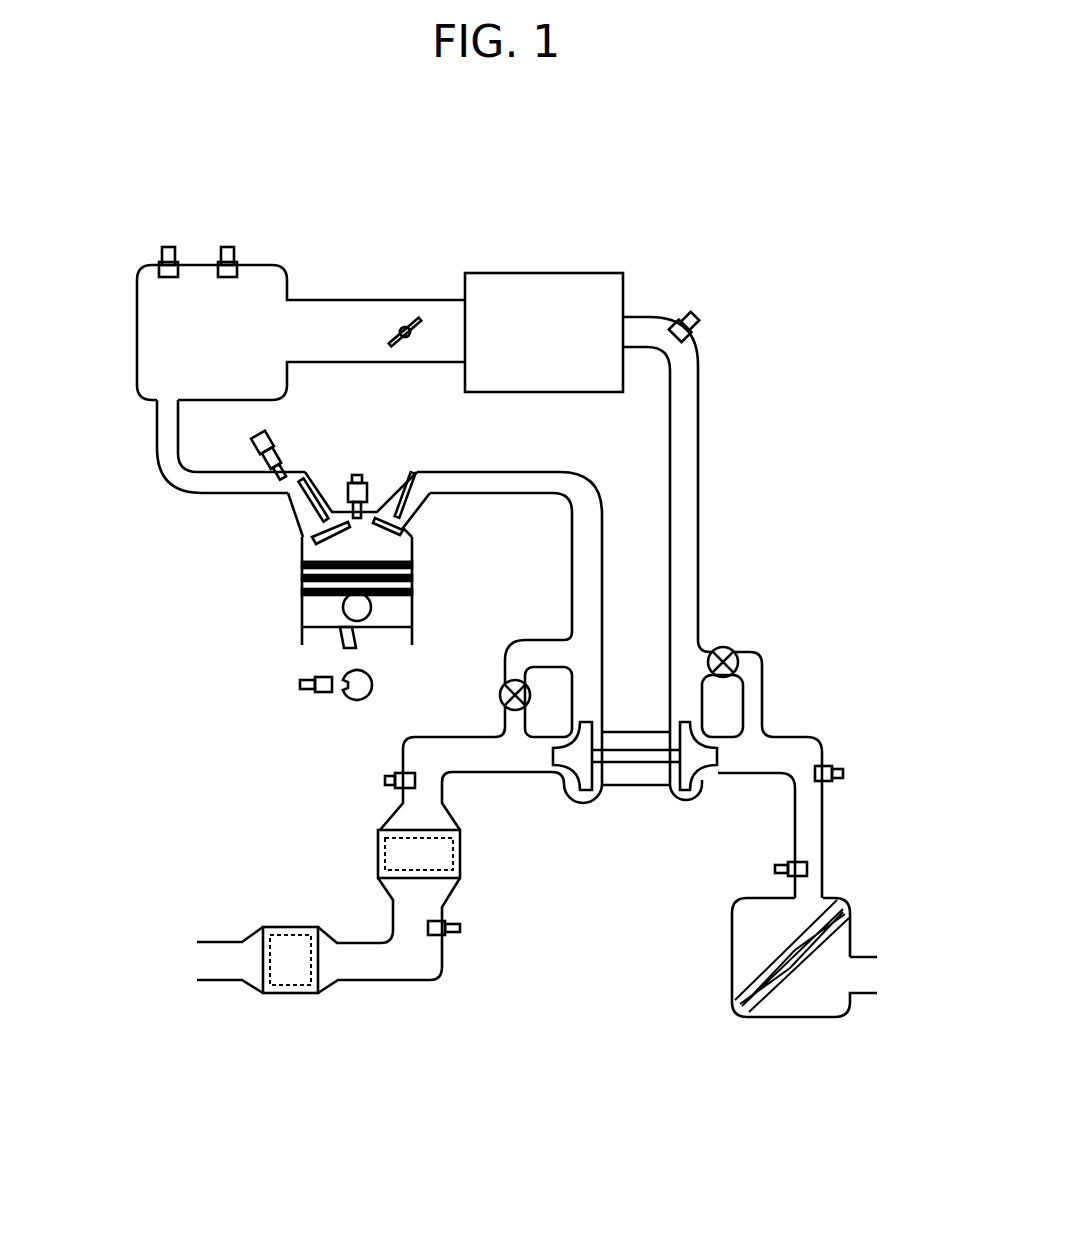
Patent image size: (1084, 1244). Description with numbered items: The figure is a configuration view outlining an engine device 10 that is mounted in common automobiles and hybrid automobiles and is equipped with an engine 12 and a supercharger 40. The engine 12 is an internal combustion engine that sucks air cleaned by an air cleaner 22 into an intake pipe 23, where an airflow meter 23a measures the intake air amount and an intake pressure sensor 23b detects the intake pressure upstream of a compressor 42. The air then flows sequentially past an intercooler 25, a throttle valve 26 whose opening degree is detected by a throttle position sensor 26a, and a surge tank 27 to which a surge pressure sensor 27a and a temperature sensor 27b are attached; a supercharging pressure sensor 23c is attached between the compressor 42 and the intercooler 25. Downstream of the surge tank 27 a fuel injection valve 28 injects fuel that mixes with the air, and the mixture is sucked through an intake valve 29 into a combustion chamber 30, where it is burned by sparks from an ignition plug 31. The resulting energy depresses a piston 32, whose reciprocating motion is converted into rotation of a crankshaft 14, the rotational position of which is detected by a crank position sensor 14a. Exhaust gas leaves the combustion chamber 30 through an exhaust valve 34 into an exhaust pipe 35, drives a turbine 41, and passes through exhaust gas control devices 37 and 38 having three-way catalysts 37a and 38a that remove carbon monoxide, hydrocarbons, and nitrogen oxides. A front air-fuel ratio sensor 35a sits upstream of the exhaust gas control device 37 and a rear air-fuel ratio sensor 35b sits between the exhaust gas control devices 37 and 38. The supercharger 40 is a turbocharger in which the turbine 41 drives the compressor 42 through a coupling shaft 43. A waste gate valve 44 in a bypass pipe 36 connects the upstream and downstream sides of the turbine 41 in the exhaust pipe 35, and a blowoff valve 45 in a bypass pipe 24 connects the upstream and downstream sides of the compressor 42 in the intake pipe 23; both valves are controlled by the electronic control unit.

The engine device 10 is at (734, 150).
The engine 12 is at (653, 221).
The crankshaft 14 is at (350, 697).
The crank position sensor 14a is at (300, 685).
The air cleaner 22 is at (732, 967).
The intake pipe 23 is at (700, 463).
The airflow meter 23a is at (775, 867).
The intake pressure sensor 23b is at (843, 773).
The supercharging pressure sensor 23c is at (696, 319).
The bypass pipe 24 is at (762, 684).
The intercooler 25 is at (542, 273).
The throttle valve 26 is at (412, 320).
The throttle position sensor 26a is at (404, 340).
The surge tank 27 is at (137, 331).
The surge pressure sensor 27a is at (226, 247).
The temperature sensor 27b is at (167, 247).
The fuel injection valve 28 is at (288, 452).
The intake valve 29 is at (318, 533).
The combustion chamber 30 is at (321, 557).
The ignition plug 31 is at (357, 474).
The piston 32 is at (317, 617).
The exhaust valve 34 is at (403, 526).
The exhaust pipe 35 is at (487, 471).
The front air-fuel ratio sensor 35a is at (385, 780).
The rear air-fuel ratio sensor 35b is at (455, 935).
The bypass pipe 36 is at (535, 638).
The exhaust gas control device 37 is at (377, 835).
The catalyst 37a is at (377, 862).
The exhaust gas control device 38 is at (275, 995).
The catalyst 38a is at (290, 995).
The supercharger 40 is at (593, 856).
The turbine 41 is at (565, 770).
The compressor 42 is at (705, 772).
The coupling shaft 43 is at (632, 765).
The waste gate valve 44 is at (500, 694).
The blowoff valve 45 is at (723, 647).